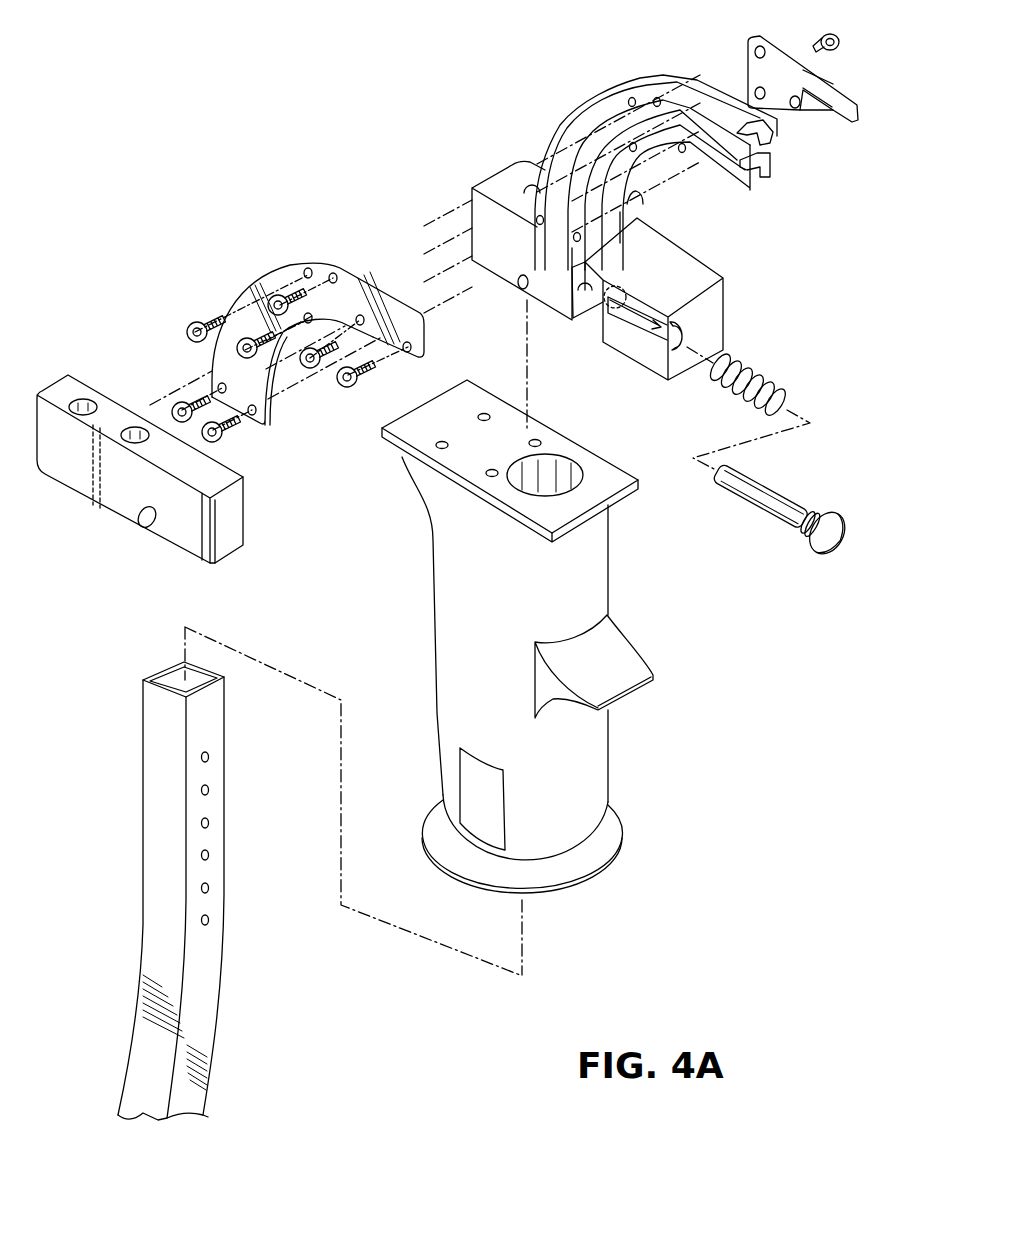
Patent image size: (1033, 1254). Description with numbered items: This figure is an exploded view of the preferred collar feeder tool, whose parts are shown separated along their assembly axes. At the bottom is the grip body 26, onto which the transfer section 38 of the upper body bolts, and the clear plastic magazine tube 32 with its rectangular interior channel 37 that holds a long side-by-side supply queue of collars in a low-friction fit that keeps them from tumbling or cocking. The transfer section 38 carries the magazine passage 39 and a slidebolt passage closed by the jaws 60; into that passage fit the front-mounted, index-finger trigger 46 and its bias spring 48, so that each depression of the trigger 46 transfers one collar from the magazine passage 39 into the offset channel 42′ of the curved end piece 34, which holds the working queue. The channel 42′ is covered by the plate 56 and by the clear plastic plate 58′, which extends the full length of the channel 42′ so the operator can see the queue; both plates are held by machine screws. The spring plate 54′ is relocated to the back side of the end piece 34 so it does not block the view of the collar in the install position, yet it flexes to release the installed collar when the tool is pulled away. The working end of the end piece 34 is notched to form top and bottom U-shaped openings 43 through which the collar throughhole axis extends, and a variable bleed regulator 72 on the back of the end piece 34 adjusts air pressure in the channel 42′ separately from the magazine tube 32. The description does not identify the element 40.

The grip body 26 is at (588, 577).
The magazine tube 32 is at (165, 768).
The curved end piece 34 is at (597, 100).
The interior channel 37 is at (170, 675).
The transfer section 38 is at (447, 147).
The magazine passage 39 is at (552, 467).
The mounting plate 40 is at (605, 475).
The channel 42′ is at (665, 122).
The U-shaped openings 43 is at (778, 125).
The trigger 46 is at (793, 507).
The bias spring 48 is at (779, 393).
The spring plate 54′ is at (847, 108).
The plate 56 is at (258, 373).
The clear plastic plate 58′ is at (370, 333).
The jaws 60 is at (230, 512).
The variable bleed regulator 72 is at (631, 213).